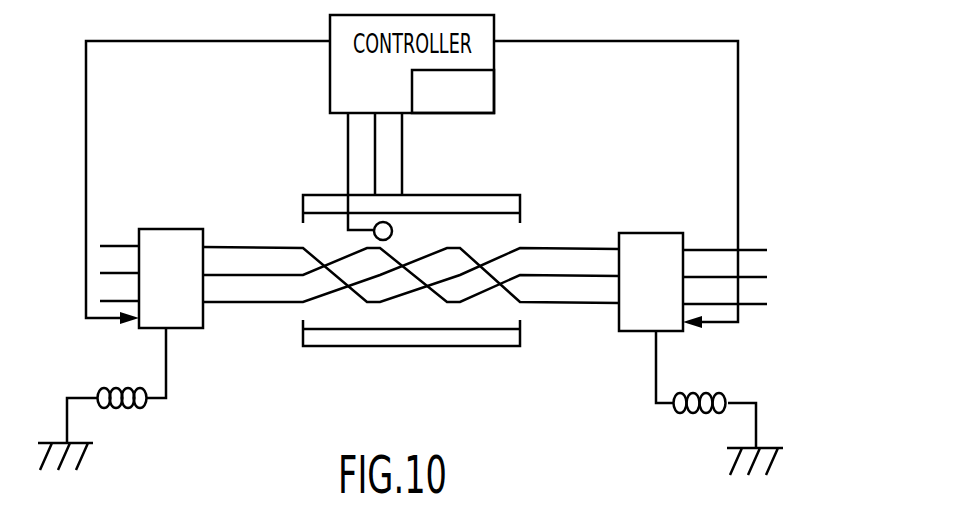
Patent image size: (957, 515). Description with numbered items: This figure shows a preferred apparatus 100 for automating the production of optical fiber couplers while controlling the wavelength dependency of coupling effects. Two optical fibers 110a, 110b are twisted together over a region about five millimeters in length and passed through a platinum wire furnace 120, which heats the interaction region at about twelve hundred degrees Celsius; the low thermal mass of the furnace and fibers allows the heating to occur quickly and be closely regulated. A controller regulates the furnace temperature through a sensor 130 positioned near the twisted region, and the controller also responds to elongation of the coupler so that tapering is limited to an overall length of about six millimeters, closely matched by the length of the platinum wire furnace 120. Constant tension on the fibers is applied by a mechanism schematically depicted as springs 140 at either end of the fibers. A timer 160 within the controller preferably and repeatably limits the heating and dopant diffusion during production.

The apparatus 100 is at (786, 82).
The optical fiber 110a is at (230, 246).
The optical fiber 110b is at (235, 303).
The platinum wire furnace 120 is at (522, 345).
The sensor 130 is at (391, 223).
The springs 140 is at (136, 410).
The timer 160 is at (494, 98).